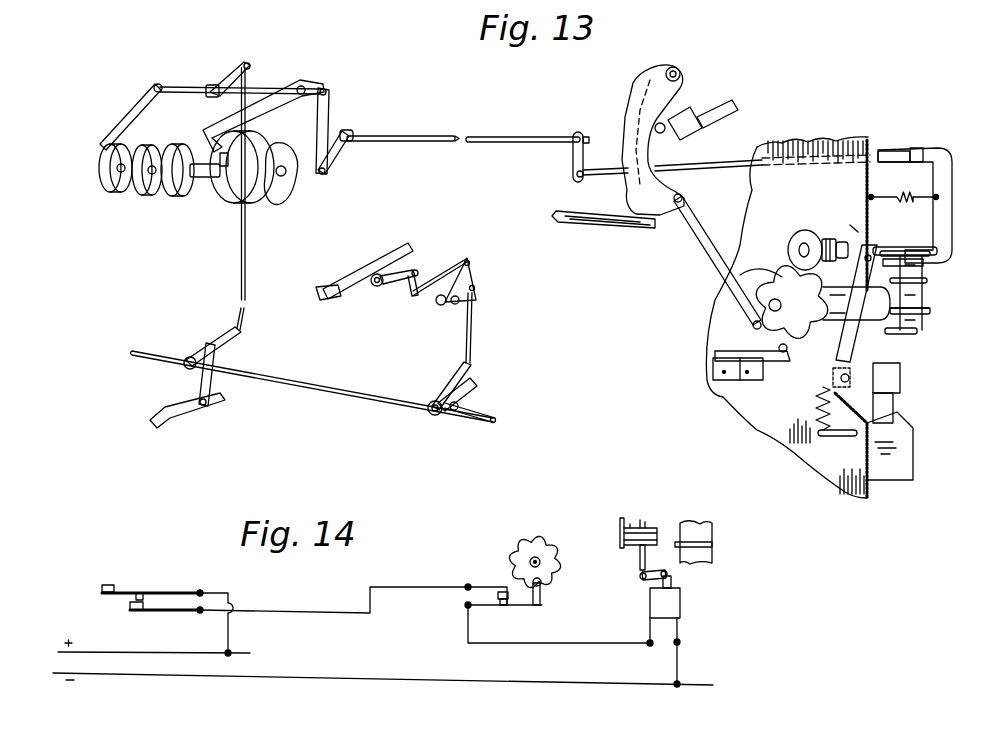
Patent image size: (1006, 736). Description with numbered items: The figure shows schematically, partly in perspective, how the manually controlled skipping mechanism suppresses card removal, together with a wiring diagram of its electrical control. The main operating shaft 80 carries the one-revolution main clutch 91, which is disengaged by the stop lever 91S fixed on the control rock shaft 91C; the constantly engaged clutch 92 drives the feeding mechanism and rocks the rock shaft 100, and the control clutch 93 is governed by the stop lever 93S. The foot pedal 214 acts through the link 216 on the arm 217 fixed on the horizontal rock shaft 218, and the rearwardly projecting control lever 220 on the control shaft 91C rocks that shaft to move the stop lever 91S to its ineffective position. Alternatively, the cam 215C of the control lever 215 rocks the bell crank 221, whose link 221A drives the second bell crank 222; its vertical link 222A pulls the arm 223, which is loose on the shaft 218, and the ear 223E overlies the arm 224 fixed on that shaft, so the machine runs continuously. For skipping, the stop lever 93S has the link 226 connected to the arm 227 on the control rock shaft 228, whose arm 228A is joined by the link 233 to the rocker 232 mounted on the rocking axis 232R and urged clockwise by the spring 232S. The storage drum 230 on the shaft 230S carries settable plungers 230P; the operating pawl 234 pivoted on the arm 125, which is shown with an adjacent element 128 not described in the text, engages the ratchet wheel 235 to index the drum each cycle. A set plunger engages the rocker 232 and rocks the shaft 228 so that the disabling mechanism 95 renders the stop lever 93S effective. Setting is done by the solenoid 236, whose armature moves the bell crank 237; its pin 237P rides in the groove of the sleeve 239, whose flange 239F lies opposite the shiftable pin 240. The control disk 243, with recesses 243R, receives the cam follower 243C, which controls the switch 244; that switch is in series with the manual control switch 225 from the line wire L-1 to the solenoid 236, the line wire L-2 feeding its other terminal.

In FIG. 13, the main clutch 91 is at (107, 187).
In FIG. 13, the stop lever 91S is at (130, 110).
In FIG. 13, the control rock shaft 91C is at (177, 88).
In FIG. 13, the clutch 92 is at (167, 190).
In FIG. 13, the control clutch 93 is at (252, 205).
In FIG. 13, the stop lever 93S is at (267, 108).
In FIG. 13, the main operating shaft 80 is at (284, 175).
In FIG. 13, the control lever 220 is at (217, 78).
In FIG. 13, the link 226 is at (325, 122).
In FIG. 13, the arm 227 is at (337, 155).
In FIG. 13, the control rock shaft 228 is at (500, 138).
In FIG. 13, the arm 228A is at (570, 160).
In FIG. 13, the link 233 is at (690, 167).
In FIG. 13, the arm 125 is at (632, 183).
In FIG. 13, the stud 128 is at (732, 100).
In FIG. 13, the rock shaft 100 is at (563, 223).
In FIG. 13, the operating pawl 234 is at (712, 250).
In FIG. 13, the ratchet wheel 235 is at (775, 262).
In FIG. 13, the disabling mechanism 95 is at (719, 411).
In FIG. 14, the disabling mechanism 95 is at (537, 522).
In FIG. 13, the sleeve 239 is at (828, 230).
In FIG. 13, the laterally projecting pin 237P is at (855, 222).
In FIG. 13, the control disk 243 is at (810, 350).
In FIG. 14, the control disk 243 is at (513, 555).
In FIG. 13, the shaft 230S is at (769, 305).
In FIG. 13, the bell crank 237 is at (870, 380).
In FIG. 13, the solenoid 236 is at (893, 463).
In FIG. 14, the solenoid 236 is at (682, 602).
In FIG. 13, the rocker 232 is at (935, 148).
In FIG. 13, the spring 232S is at (917, 177).
In FIG. 13, the rocking axis 232R is at (887, 247).
In FIG. 13, the storage drum 230 is at (922, 293).
In FIG. 14, the storage drum 230 is at (712, 523).
In FIG. 13, the plungers 230P is at (920, 313).
In FIG. 14, the plungers 230P is at (707, 547).
In FIG. 13, the cam follower 243C is at (780, 347).
In FIG. 14, the cam follower 243C is at (543, 597).
In FIG. 13, the switch 244 is at (722, 367).
In FIG. 14, the switch 244 is at (483, 595).
In FIG. 13, the arm 217 is at (227, 337).
In FIG. 13, the horizontal rock shaft 218 is at (305, 382).
In FIG. 13, the link 216 is at (198, 382).
In FIG. 13, the foot pedal 214 is at (198, 418).
In FIG. 13, the control lever 215 is at (328, 300).
In FIG. 13, the cam 215C is at (375, 273).
In FIG. 13, the bell crank 221 is at (393, 290).
In FIG. 13, the link 221A is at (430, 275).
In FIG. 13, the second bell crank 222 is at (468, 275).
In FIG. 13, the vertical link 222A is at (473, 328).
In FIG. 13, the arm 223 is at (440, 388).
In FIG. 13, the ear 223E is at (473, 380).
In FIG. 13, the arm 224 is at (460, 397).
In FIG. 14, the manual control switch 225 is at (146, 593).
In FIG. 14, the line wire L-1 is at (115, 652).
In FIG. 14, the line wire L-2 is at (130, 673).
In FIG. 14, the recesses 243R is at (555, 572).
In FIG. 14, the flange 239F is at (622, 523).
In FIG. 14, the shiftable pin 240 is at (662, 530).